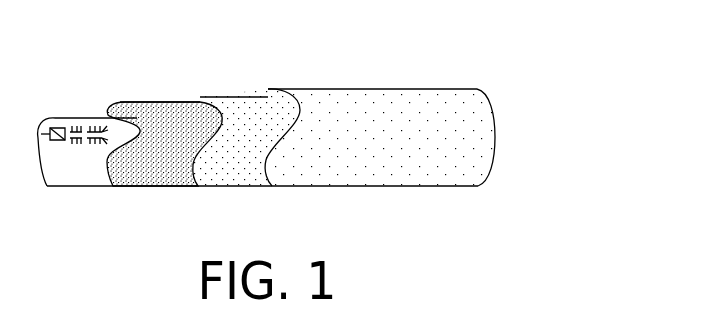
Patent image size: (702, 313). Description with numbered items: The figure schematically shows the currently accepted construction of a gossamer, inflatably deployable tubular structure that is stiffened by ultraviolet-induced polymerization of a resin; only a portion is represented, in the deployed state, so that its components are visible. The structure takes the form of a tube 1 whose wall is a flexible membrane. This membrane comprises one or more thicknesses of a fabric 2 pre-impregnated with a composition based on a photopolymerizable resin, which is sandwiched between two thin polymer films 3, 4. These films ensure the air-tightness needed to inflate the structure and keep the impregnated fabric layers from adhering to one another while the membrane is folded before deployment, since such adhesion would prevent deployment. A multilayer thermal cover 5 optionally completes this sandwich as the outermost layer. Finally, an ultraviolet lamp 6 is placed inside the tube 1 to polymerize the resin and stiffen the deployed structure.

The tube 1 is at (376, 72).
The fabric 2 is at (173, 175).
The polymer film 3 is at (83, 176).
The polymer film 4 is at (250, 175).
The multilayer thermal cover 5 is at (360, 175).
The ultraviolet lamp 6 is at (79, 122).